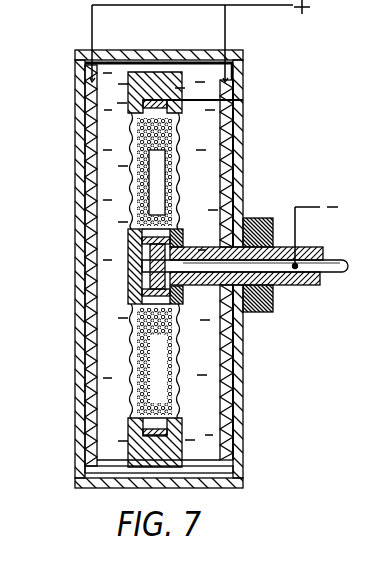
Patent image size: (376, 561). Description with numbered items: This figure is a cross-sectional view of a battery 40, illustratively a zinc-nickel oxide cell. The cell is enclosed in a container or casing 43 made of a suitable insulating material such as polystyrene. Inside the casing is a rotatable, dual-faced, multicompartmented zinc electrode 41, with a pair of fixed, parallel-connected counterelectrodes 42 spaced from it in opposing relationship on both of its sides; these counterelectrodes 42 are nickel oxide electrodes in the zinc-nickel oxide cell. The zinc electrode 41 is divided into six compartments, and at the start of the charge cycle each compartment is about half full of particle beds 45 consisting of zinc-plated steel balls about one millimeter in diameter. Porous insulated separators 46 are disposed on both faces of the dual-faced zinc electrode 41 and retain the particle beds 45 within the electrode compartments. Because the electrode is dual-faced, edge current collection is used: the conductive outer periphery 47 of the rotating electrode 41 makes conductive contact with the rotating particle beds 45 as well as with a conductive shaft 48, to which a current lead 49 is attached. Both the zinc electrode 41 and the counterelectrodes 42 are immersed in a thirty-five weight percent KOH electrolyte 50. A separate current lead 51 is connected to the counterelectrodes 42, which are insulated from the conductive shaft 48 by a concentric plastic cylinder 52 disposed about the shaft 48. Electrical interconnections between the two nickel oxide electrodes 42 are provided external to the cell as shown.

The battery 40 is at (248, 70).
The zinc electrode 41 is at (170, 193).
The counterelectrodes 42 is at (90, 80).
The cell container or casing 43 is at (243, 137).
The particle beds 45 is at (140, 216).
The porous insulated separators 46 is at (132, 207).
The conductive outer periphery 47 is at (243, 92).
The conductive shaft 48 is at (331, 259).
The current lead 49 is at (315, 207).
The electrolyte 50 is at (124, 174).
The current lead 51 is at (258, 5).
The concentric plastic cylinder 52 is at (303, 285).